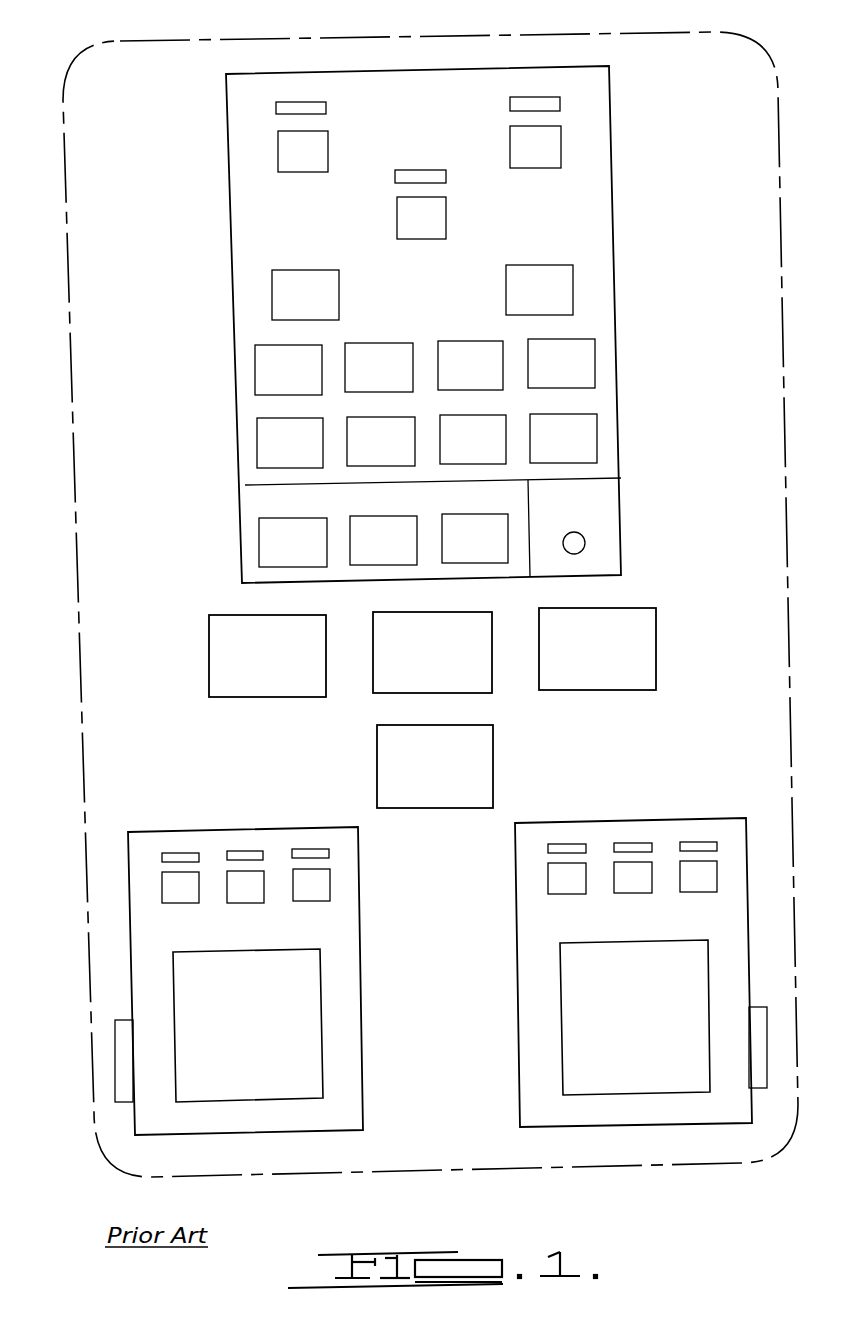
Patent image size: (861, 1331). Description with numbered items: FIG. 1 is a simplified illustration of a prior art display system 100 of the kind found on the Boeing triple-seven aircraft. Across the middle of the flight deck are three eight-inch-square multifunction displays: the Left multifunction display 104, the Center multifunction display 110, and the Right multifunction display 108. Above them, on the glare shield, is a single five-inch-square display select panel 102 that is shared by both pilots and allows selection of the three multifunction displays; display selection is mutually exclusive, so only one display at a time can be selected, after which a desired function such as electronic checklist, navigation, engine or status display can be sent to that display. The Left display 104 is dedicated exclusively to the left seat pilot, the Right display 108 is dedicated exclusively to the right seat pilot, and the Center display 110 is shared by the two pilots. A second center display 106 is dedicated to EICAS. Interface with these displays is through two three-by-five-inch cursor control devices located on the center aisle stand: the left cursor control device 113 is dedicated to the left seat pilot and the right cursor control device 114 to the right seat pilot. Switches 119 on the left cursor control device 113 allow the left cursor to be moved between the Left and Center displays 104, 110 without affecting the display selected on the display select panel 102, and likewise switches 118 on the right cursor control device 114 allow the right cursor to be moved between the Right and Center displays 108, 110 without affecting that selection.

The prior art flight deck display system 100 is at (63, 38).
The display select panel 102 is at (603, 158).
The Left multifunction display 104 is at (209, 655).
The second center display 106 is at (383, 683).
The Right multifunction display 108 is at (646, 640).
The Center multifunction display 110 is at (483, 770).
The left cursor control device 113 is at (277, 953).
The right cursor control device 114 is at (611, 945).
The switches 118 is at (548, 880).
The switches 119 is at (322, 890).